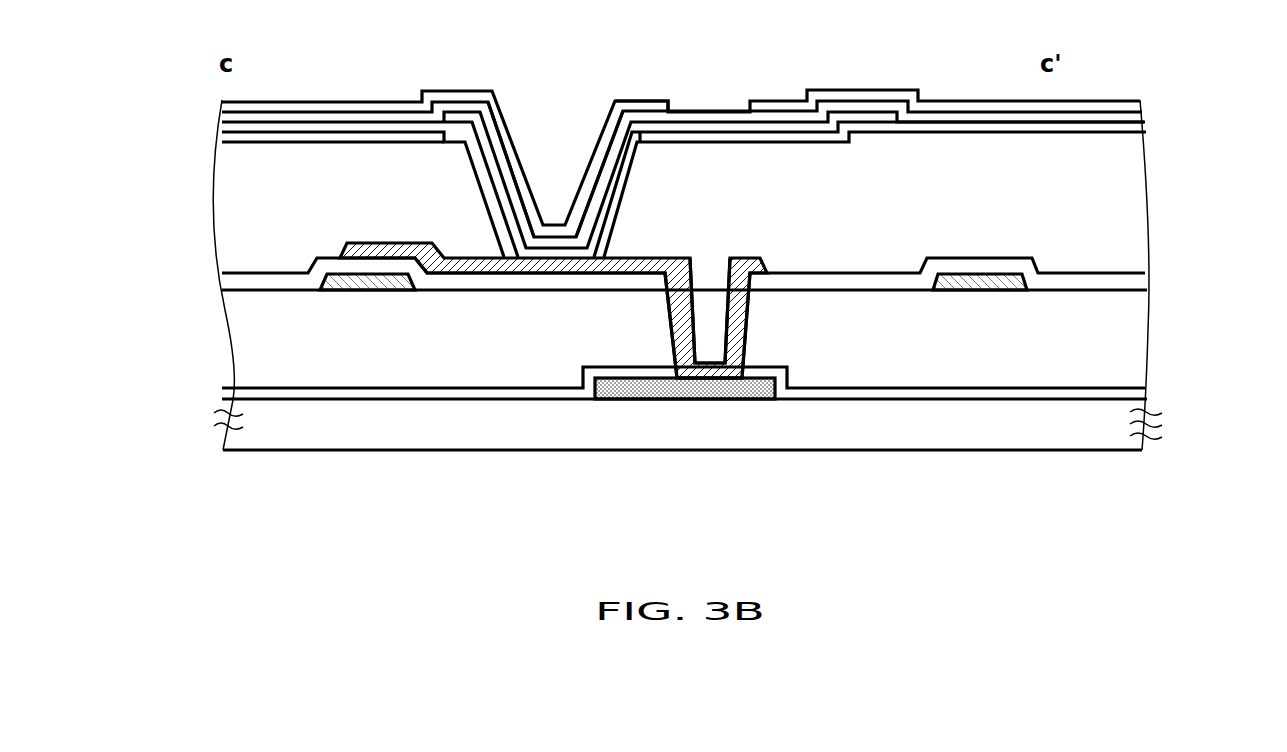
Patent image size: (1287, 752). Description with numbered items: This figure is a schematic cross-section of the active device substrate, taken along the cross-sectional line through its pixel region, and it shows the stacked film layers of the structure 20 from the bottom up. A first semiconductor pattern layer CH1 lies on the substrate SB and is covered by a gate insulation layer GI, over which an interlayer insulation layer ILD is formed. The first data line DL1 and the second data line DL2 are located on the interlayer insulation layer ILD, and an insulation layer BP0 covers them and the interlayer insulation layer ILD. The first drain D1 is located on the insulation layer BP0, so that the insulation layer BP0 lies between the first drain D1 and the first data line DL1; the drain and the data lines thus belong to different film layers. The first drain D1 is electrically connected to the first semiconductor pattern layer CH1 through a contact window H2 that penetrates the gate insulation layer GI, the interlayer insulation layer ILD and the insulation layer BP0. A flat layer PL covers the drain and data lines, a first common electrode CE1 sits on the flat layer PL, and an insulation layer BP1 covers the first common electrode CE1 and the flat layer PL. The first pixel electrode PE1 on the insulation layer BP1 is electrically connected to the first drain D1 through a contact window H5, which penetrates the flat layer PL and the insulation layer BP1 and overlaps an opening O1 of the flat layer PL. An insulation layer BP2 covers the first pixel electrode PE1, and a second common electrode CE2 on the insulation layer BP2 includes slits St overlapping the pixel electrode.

The pixel structure 20 is at (1197, 526).
The substrate SB is at (1133, 437).
The gate insulation layer GI is at (1133, 393).
The first semiconductor pattern layer CH1 is at (728, 390).
The interlayer insulation layer ILD is at (1135, 329).
The first data line DL1 is at (363, 286).
The second data line DL2 is at (978, 286).
The insulation layer BP0 is at (1130, 283).
The first drain D1 is at (548, 268).
The contact window H2 is at (676, 335).
The flat layer PL is at (1118, 208).
The first common electrode CE1 is at (222, 138).
The insulation layer BP1 is at (222, 130).
The first pixel electrode PE1 is at (463, 117).
The second common electrode CE2 is at (222, 102).
The insulation layer BP2 is at (1142, 96).
The contact window H5 is at (503, 208).
The opening O1 is at (608, 208).
The slit St is at (668, 102).